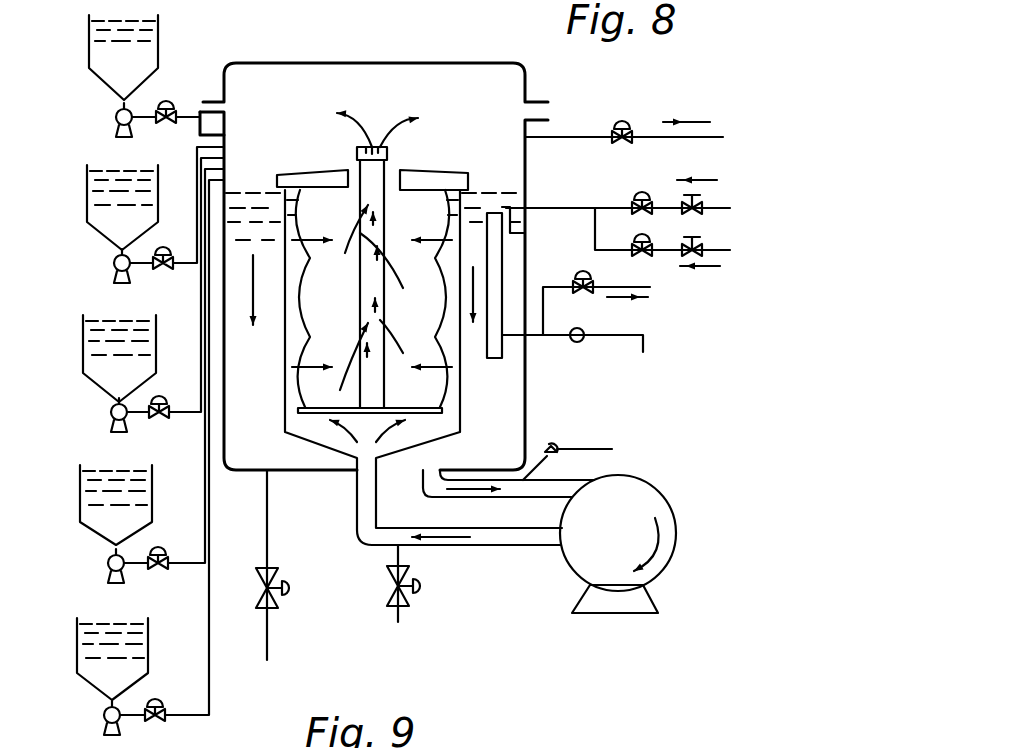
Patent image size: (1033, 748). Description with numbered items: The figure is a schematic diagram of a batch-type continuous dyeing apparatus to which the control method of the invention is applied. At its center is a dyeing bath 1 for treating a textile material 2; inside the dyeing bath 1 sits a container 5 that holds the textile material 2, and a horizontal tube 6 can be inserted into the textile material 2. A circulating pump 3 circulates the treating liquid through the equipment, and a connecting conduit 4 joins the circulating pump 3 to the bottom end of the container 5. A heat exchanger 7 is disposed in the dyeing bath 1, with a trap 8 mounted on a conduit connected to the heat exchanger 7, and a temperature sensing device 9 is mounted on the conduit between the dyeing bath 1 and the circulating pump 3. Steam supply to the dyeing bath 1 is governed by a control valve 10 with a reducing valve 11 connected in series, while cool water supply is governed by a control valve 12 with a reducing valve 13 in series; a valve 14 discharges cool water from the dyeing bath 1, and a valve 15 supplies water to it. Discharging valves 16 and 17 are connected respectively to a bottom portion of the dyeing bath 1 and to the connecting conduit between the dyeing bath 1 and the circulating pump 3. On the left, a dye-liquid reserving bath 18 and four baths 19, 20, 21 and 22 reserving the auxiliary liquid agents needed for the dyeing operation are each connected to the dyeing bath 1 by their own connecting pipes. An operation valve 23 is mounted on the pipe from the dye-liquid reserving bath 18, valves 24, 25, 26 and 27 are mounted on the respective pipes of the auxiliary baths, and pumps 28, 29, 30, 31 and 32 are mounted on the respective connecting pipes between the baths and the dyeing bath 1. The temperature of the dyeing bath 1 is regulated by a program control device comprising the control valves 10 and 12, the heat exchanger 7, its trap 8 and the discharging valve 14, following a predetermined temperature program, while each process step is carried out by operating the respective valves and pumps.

The dyeing bath 1 is at (458, 63).
The textile material 2 is at (426, 184).
The circulating pump 3 is at (665, 492).
The connecting conduit 4 is at (493, 548).
The container 5 is at (285, 372).
The horizontal tube 6 is at (357, 151).
The heat exchanger 7 is at (502, 350).
The trap 8 is at (582, 341).
The temperature sensing device 9 is at (560, 448).
The control valve 10 is at (638, 193).
The reducing valve 11 is at (700, 194).
The control valve 12 is at (652, 254).
The reducing valve 13 is at (703, 246).
The valve 14 is at (578, 272).
The valve 15 is at (628, 122).
The discharging valve 16 is at (290, 594).
The discharging valve 17 is at (421, 593).
The dye-liquid reserving bath 18 is at (89, 62).
The bath 19 is at (87, 205).
The bath 20 is at (83, 350).
The bath 21 is at (80, 500).
The bath 22 is at (77, 638).
The operation valve 23 is at (166, 102).
The valve 24 is at (163, 249).
The valve 25 is at (159, 398).
The valve 26 is at (158, 549).
The valve 27 is at (155, 701).
The pump 28 is at (116, 117).
The pump 29 is at (114, 263).
The pump 30 is at (111, 412).
The pump 31 is at (108, 563).
The pump 32 is at (104, 715).